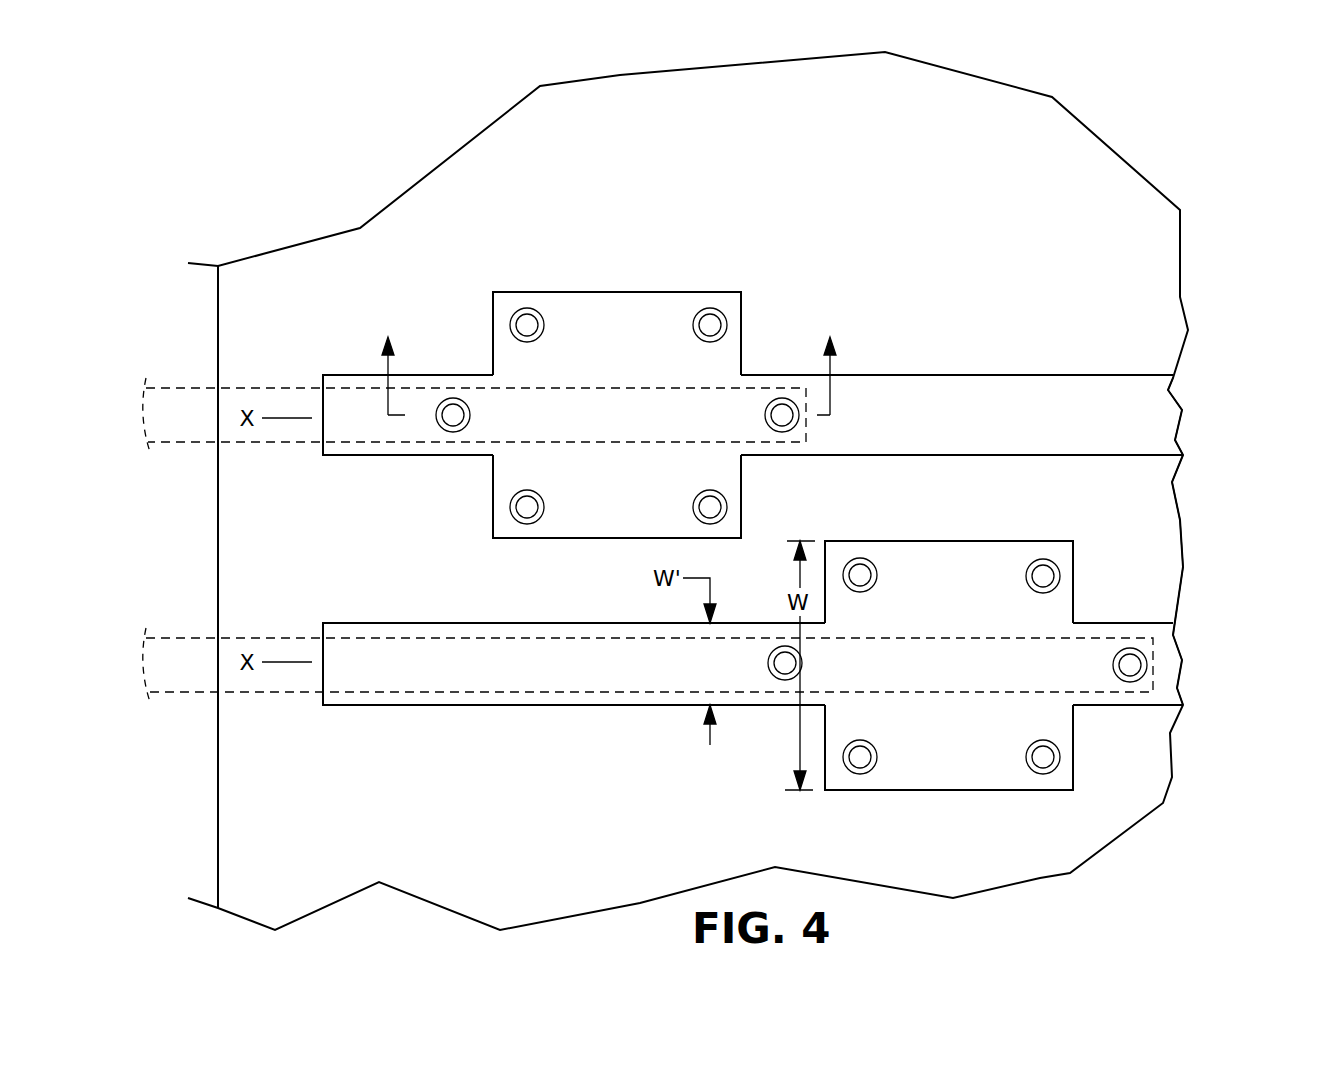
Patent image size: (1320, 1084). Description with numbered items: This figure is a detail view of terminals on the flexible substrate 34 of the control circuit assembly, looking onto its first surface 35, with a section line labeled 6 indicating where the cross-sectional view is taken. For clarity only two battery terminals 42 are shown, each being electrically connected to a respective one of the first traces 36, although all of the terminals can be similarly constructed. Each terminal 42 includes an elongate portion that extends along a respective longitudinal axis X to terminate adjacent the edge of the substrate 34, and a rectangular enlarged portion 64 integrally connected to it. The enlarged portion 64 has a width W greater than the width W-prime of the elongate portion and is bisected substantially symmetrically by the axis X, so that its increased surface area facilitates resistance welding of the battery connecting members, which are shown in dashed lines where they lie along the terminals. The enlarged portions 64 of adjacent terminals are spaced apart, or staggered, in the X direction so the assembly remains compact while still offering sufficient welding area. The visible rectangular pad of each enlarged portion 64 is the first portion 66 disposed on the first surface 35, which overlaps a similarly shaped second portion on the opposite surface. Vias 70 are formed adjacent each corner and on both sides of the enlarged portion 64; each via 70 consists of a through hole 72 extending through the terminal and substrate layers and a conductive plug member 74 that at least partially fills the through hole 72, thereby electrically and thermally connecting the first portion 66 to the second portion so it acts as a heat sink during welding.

The flexible substrate 34 is at (953, 115).
The first surface 35 is at (782, 139).
The first traces 36 is at (1163, 663).
The battery terminals 42 is at (722, 490).
The enlarged portion 64 is at (647, 383).
The first portion 66 is at (630, 327).
The vias 70 is at (729, 333).
The through hole 72 is at (703, 317).
The conductive plug member 74 is at (713, 343).
The section line 6- 6 is at (609, 361).